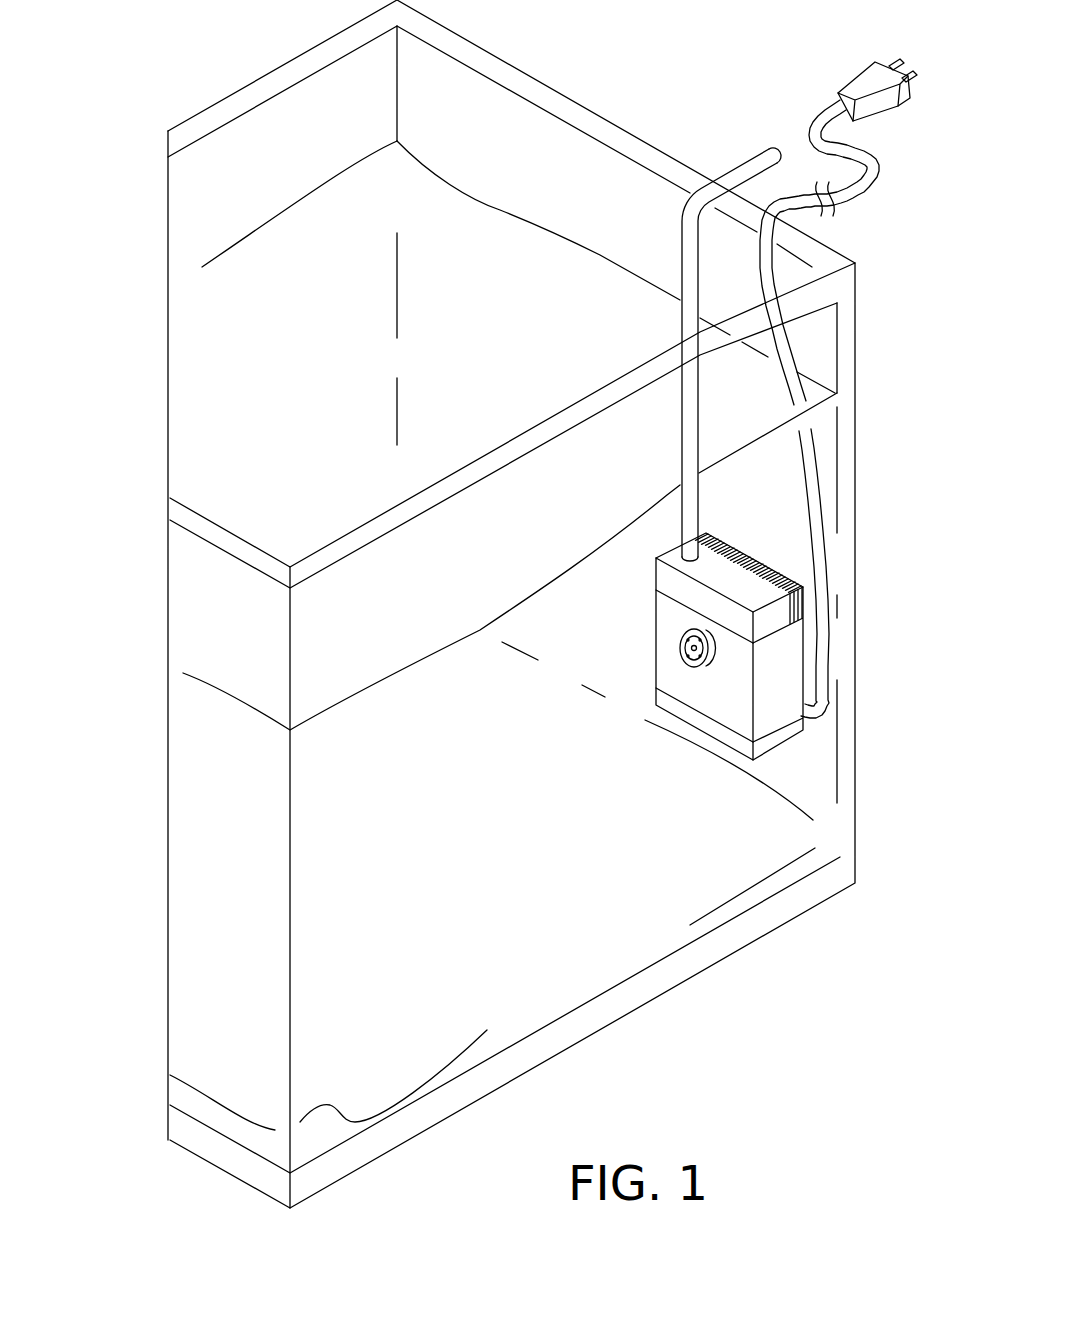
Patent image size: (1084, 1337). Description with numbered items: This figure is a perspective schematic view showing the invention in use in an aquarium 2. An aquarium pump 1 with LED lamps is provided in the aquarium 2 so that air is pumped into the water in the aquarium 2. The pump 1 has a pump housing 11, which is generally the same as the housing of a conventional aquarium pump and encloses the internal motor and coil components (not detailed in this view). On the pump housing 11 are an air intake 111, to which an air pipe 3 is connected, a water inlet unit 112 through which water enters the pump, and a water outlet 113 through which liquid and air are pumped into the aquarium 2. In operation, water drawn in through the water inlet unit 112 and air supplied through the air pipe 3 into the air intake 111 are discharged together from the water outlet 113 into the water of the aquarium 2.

The aquarium pump 1 is at (732, 539).
The pump housing 11 is at (776, 762).
The air intake 111 is at (680, 552).
The water inlet unit 112 is at (800, 603).
The water outlet 113 is at (680, 650).
The aquarium 2 is at (512, 162).
The air pipe 3 is at (742, 163).